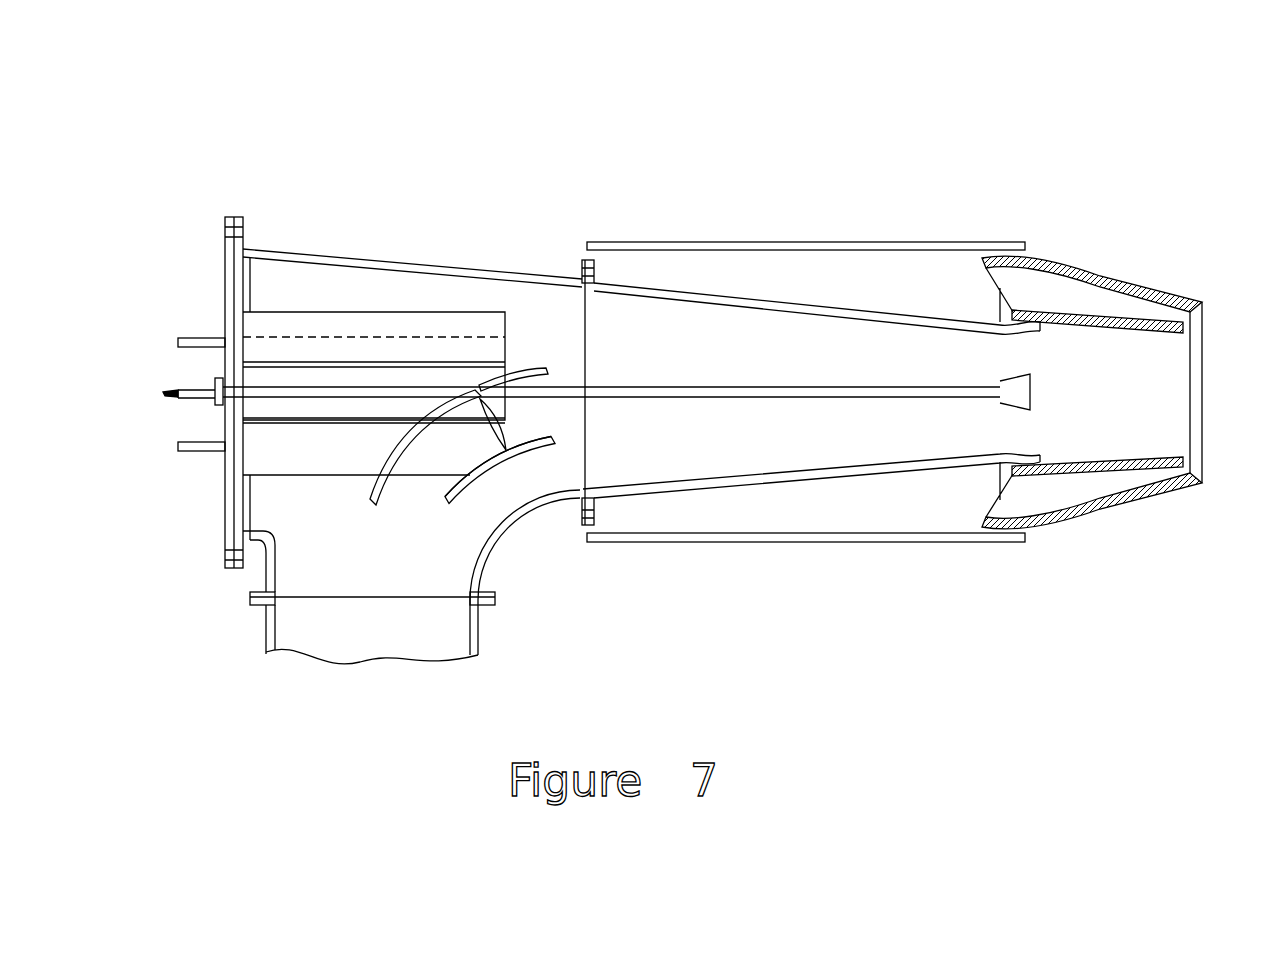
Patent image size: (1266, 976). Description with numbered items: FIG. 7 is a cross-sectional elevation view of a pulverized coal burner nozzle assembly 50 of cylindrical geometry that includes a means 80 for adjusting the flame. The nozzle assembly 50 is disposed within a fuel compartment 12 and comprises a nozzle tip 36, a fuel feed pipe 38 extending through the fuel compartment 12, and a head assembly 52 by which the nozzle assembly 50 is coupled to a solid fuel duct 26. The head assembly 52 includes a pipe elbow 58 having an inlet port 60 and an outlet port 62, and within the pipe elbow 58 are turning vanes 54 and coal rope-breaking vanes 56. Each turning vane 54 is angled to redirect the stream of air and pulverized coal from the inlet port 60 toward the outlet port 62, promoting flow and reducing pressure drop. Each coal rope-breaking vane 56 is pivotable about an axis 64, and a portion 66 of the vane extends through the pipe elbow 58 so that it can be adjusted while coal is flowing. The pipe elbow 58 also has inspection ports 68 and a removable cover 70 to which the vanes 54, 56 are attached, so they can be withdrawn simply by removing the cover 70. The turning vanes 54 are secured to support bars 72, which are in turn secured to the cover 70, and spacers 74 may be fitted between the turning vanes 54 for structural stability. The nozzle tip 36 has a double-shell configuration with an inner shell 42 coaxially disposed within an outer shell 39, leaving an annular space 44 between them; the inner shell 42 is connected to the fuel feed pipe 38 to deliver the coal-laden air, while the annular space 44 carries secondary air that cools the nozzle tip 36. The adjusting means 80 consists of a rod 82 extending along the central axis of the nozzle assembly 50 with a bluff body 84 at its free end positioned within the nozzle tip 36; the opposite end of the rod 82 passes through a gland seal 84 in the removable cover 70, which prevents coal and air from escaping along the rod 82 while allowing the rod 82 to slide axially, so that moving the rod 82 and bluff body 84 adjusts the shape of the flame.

The nozzle assembly 50 is at (840, 126).
The head assembly 52 is at (412, 230).
The fuel compartment 12 is at (833, 241).
The solid fuel duct 26 is at (480, 633).
The nozzle tip 36 is at (1064, 249).
The fuel feed pipe 38 is at (833, 309).
The outer shell 39 is at (1178, 297).
The inner shell 42 is at (1058, 310).
The annular space 44 is at (1120, 305).
The turning vane 54 is at (585, 335).
The coal rope-breaking vane 56 is at (455, 322).
The pipe elbow 58 is at (273, 250).
The inlet port 60 is at (370, 597).
The outlet port 62 is at (588, 465).
The axis 64 is at (262, 392).
The portion of the coal rope-breaking vane 66 is at (178, 340).
The inspection ports 68 is at (240, 460).
The removable cover 70 is at (225, 518).
The support bars 72 is at (337, 466).
The spacers 74 is at (463, 447).
The means for adjusting a flame 80 is at (692, 376).
The rod 82 is at (831, 388).
The bluff body 84 is at (220, 406).